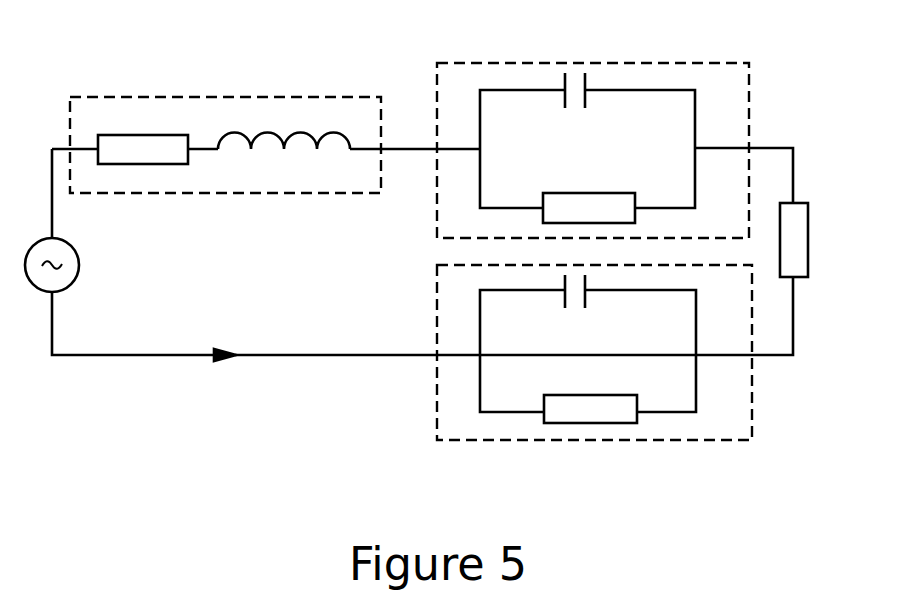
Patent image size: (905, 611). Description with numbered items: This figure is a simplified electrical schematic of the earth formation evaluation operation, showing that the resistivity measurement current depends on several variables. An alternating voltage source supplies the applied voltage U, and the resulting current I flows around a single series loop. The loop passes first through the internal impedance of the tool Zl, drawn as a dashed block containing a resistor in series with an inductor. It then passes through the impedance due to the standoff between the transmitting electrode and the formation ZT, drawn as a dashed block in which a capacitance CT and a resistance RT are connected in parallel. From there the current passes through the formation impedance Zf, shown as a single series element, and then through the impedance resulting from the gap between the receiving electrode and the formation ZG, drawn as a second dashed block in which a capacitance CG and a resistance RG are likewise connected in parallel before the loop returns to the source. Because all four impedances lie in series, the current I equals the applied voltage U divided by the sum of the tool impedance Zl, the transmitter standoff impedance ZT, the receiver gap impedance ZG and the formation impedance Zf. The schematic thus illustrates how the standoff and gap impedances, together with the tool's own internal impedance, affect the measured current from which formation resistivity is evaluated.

The applied voltage U is at (66, 265).
The current I is at (228, 341).
The internal impedance of tool Zl is at (225, 145).
The transmitting electrode standoff impedance ZT is at (593, 129).
The transformer capacitance CT is at (576, 64).
The transformer resistance RT is at (589, 187).
The formation impedance Zf is at (810, 240).
The receiving electrode gap impedance ZG is at (594, 378).
The ground capacitance CG is at (573, 315).
The ground resistance RG is at (590, 443).